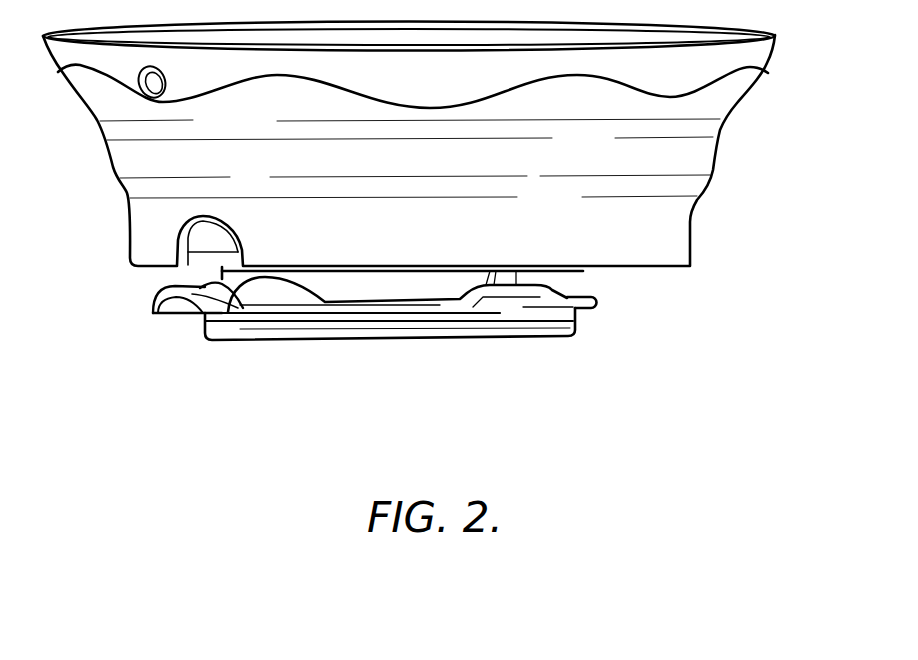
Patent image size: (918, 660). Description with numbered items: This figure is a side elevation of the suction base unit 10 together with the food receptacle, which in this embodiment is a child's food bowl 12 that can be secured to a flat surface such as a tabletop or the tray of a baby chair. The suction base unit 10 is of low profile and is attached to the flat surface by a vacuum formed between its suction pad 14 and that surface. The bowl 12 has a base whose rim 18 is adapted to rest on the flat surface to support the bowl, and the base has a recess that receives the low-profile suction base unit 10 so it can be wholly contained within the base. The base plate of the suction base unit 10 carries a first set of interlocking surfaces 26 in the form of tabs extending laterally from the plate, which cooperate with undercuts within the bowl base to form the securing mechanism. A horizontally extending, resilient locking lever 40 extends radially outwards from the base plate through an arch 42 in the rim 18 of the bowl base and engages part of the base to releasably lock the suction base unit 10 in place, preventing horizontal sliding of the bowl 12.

The suction base unit 10 is at (596, 327).
The food bowl 12 is at (723, 164).
The suction pad 14 is at (455, 340).
The rim 18 is at (663, 240).
The first set of interlocking surfaces 26 is at (600, 297).
The locking lever 40 is at (187, 304).
The arch 42 is at (207, 233).